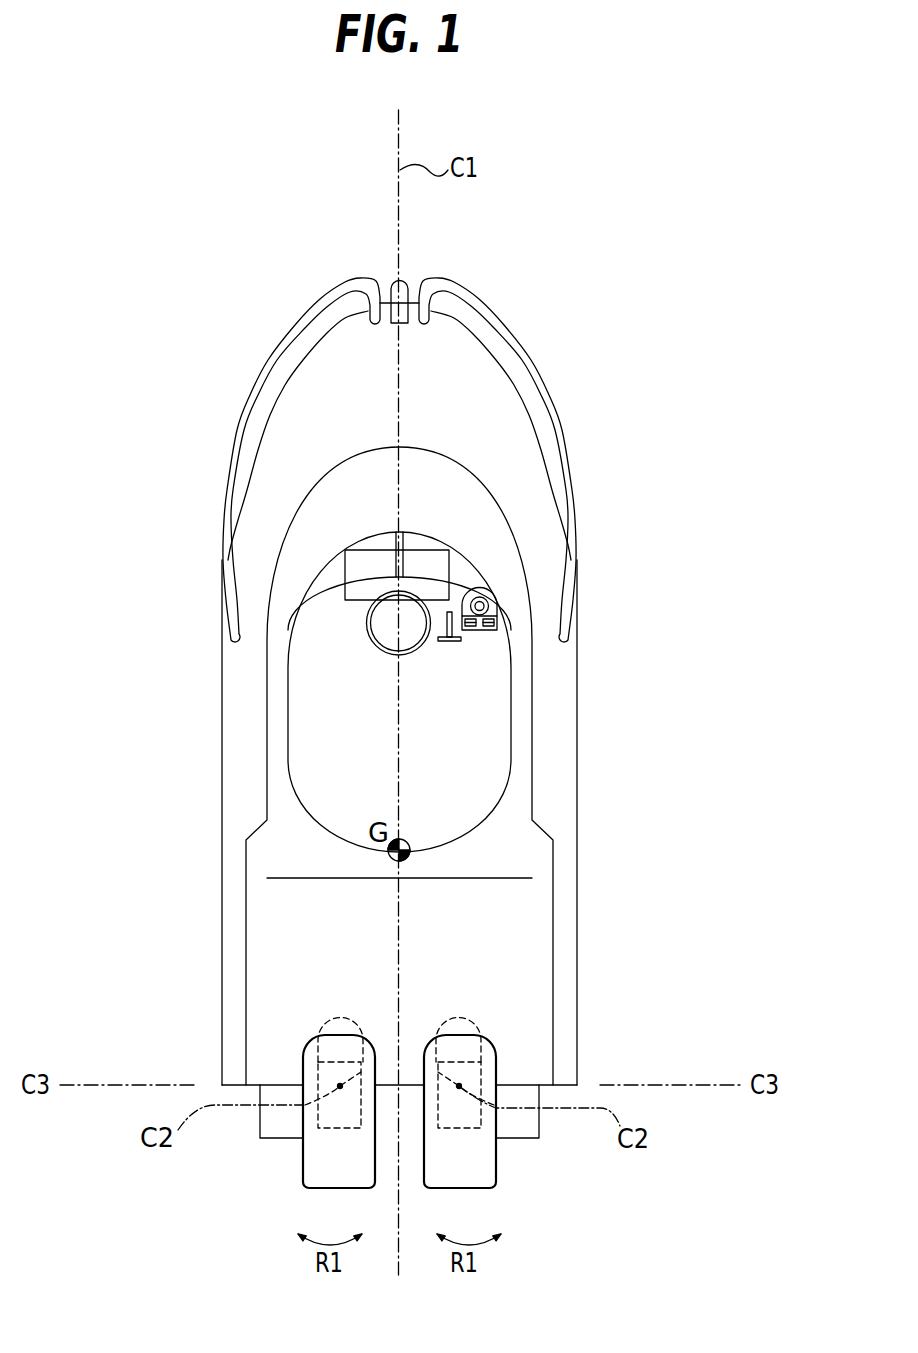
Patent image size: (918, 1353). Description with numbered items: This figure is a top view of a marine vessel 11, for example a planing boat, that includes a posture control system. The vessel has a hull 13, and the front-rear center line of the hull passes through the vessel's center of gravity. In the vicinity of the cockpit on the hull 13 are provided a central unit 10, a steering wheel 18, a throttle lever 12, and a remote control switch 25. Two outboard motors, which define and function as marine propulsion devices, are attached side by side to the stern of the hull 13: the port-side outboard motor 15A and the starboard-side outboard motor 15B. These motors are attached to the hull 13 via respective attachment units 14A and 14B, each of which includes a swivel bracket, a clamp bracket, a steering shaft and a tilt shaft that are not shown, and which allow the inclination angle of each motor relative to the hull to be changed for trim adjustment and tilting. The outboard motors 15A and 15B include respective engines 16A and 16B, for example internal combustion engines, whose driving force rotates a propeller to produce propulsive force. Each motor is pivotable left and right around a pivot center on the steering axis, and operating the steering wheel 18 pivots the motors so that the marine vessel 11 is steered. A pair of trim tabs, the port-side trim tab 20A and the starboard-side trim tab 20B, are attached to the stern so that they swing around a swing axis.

The central unit 10 is at (449, 567).
The marine vessel 11 is at (248, 341).
The throttle lever 12 is at (457, 643).
The hull 13 is at (207, 796).
The attachment unit 14A is at (320, 1020).
The attachment unit 14B is at (479, 1020).
The outboard motor 15A is at (308, 1190).
The outboard motor 15B is at (497, 1188).
The engine 16A is at (330, 1130).
The engine 16B is at (458, 1130).
The steering wheel 18 is at (375, 648).
The trim tab 20A is at (260, 1138).
The trim tab 20B is at (539, 1138).
The remote control switch 25 is at (498, 612).